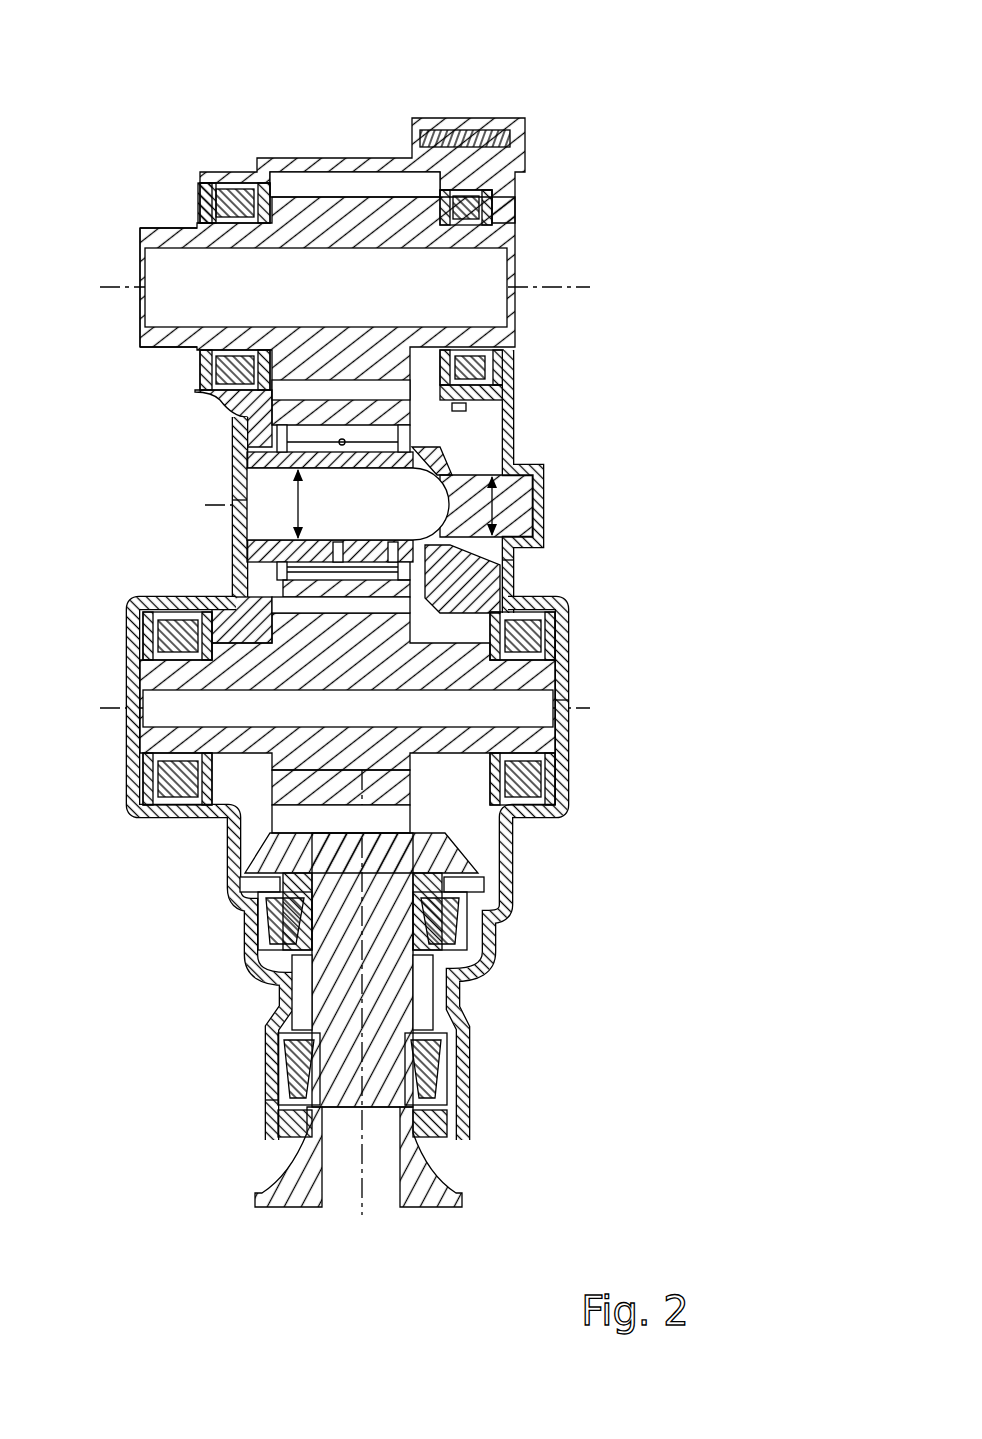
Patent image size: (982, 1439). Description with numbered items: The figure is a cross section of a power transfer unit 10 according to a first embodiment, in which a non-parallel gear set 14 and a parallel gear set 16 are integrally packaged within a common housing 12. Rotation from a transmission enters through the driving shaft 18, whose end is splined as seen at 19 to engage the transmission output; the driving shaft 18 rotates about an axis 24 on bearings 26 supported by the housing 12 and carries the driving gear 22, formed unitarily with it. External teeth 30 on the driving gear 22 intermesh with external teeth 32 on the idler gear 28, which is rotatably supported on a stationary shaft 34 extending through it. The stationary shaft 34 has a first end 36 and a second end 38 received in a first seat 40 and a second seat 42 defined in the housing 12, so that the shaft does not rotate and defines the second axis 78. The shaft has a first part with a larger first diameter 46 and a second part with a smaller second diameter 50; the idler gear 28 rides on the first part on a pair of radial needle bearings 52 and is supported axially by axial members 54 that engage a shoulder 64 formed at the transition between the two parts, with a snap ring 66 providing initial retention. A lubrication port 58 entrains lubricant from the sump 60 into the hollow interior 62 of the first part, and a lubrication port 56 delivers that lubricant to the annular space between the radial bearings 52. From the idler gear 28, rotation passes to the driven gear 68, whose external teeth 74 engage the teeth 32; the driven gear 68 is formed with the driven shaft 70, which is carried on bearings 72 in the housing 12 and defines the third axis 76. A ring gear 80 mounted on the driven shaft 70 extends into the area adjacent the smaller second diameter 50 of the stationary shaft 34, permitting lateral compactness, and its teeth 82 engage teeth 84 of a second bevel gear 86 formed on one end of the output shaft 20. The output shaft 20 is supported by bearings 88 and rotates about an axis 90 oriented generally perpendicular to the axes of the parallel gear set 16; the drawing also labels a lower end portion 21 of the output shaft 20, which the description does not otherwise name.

The power transfer unit 10 is at (642, 98).
The housing 12 is at (250, 1073).
The non-parallel gear set 14 is at (477, 897).
The parallel gear set 16 is at (288, 170).
The driving shaft 18 is at (215, 330).
The splined end 19 is at (138, 350).
The output shaft 20 is at (383, 1013).
The hub 21 is at (445, 1210).
The driving gear 22 is at (285, 193).
The axis 24 is at (525, 295).
The bearings 26 is at (200, 250).
The idler gear 28 is at (503, 390).
The external teeth 30 is at (323, 160).
The external teeth 32 is at (280, 413).
The stationary shaft 34 is at (442, 470).
The first end 36 is at (250, 458).
The second end 38 is at (535, 490).
The first seat 40 is at (250, 545).
The second seat 42 is at (545, 532).
The first diameter 46 is at (255, 488).
The second diameter 50 is at (545, 500).
The radial bearings 52 is at (358, 455).
The axial members 54 is at (290, 578).
The lubrication port 56 is at (340, 545).
The lubrication port 58 is at (393, 545).
The sump 60 is at (466, 409).
The hollow interior 62 is at (323, 504).
The shoulder 64 is at (430, 440).
The snap ring 66 is at (290, 446).
The driven gear 68 is at (308, 871).
The driven shaft 70 is at (145, 740).
The bearings 72 is at (555, 652).
The external teeth 74 is at (330, 605).
The third axis 76 is at (565, 705).
The second axis 78 is at (232, 512).
The ring gear 80 is at (440, 832).
The teeth 82 is at (470, 888).
The teeth 84 is at (258, 878).
The second bevel gear 86 is at (270, 900).
The bearings 88 is at (282, 930).
The axis 90 is at (355, 1195).